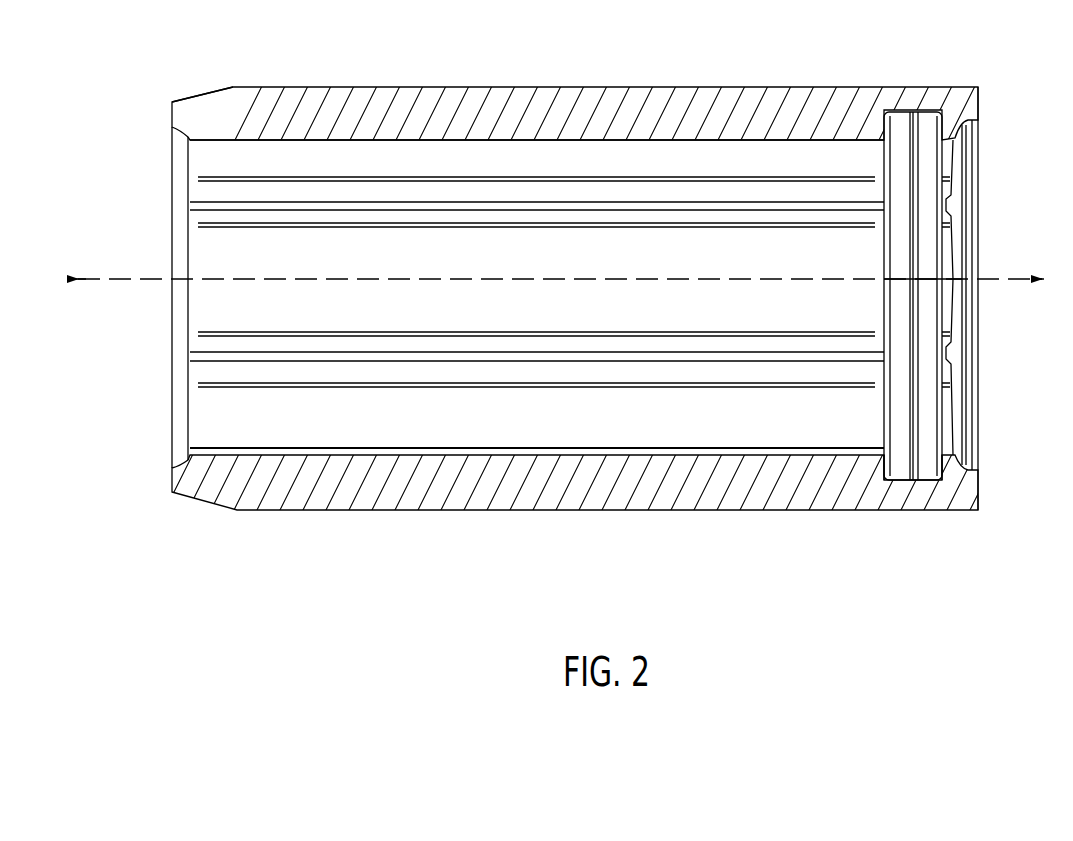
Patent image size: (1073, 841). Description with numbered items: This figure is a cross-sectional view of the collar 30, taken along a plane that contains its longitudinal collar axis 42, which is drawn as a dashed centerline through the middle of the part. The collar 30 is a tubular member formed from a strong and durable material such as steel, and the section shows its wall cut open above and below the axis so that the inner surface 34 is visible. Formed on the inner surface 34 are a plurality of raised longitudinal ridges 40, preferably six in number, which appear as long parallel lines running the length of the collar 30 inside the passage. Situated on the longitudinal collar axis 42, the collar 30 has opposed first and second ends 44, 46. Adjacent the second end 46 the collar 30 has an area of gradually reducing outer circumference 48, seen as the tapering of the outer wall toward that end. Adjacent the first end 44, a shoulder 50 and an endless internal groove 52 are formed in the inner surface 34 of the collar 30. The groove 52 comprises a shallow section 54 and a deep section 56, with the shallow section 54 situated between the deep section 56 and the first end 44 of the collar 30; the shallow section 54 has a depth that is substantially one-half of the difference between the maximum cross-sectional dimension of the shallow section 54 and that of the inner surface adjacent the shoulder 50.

The collar 30 is at (556, 282).
The inner surface 34 is at (522, 354).
The raised longitudinal ridges 40 is at (537, 304).
The longitudinal collar axis 42 is at (554, 311).
The first end 44 is at (1020, 291).
The second end 46 is at (138, 275).
The area of gradually reducing outer circumference 48 is at (182, 73).
The shoulder 50 is at (999, 293).
The endless internal groove 52 is at (897, 257).
The shallow section 54 is at (959, 335).
The deep section 56 is at (894, 507).